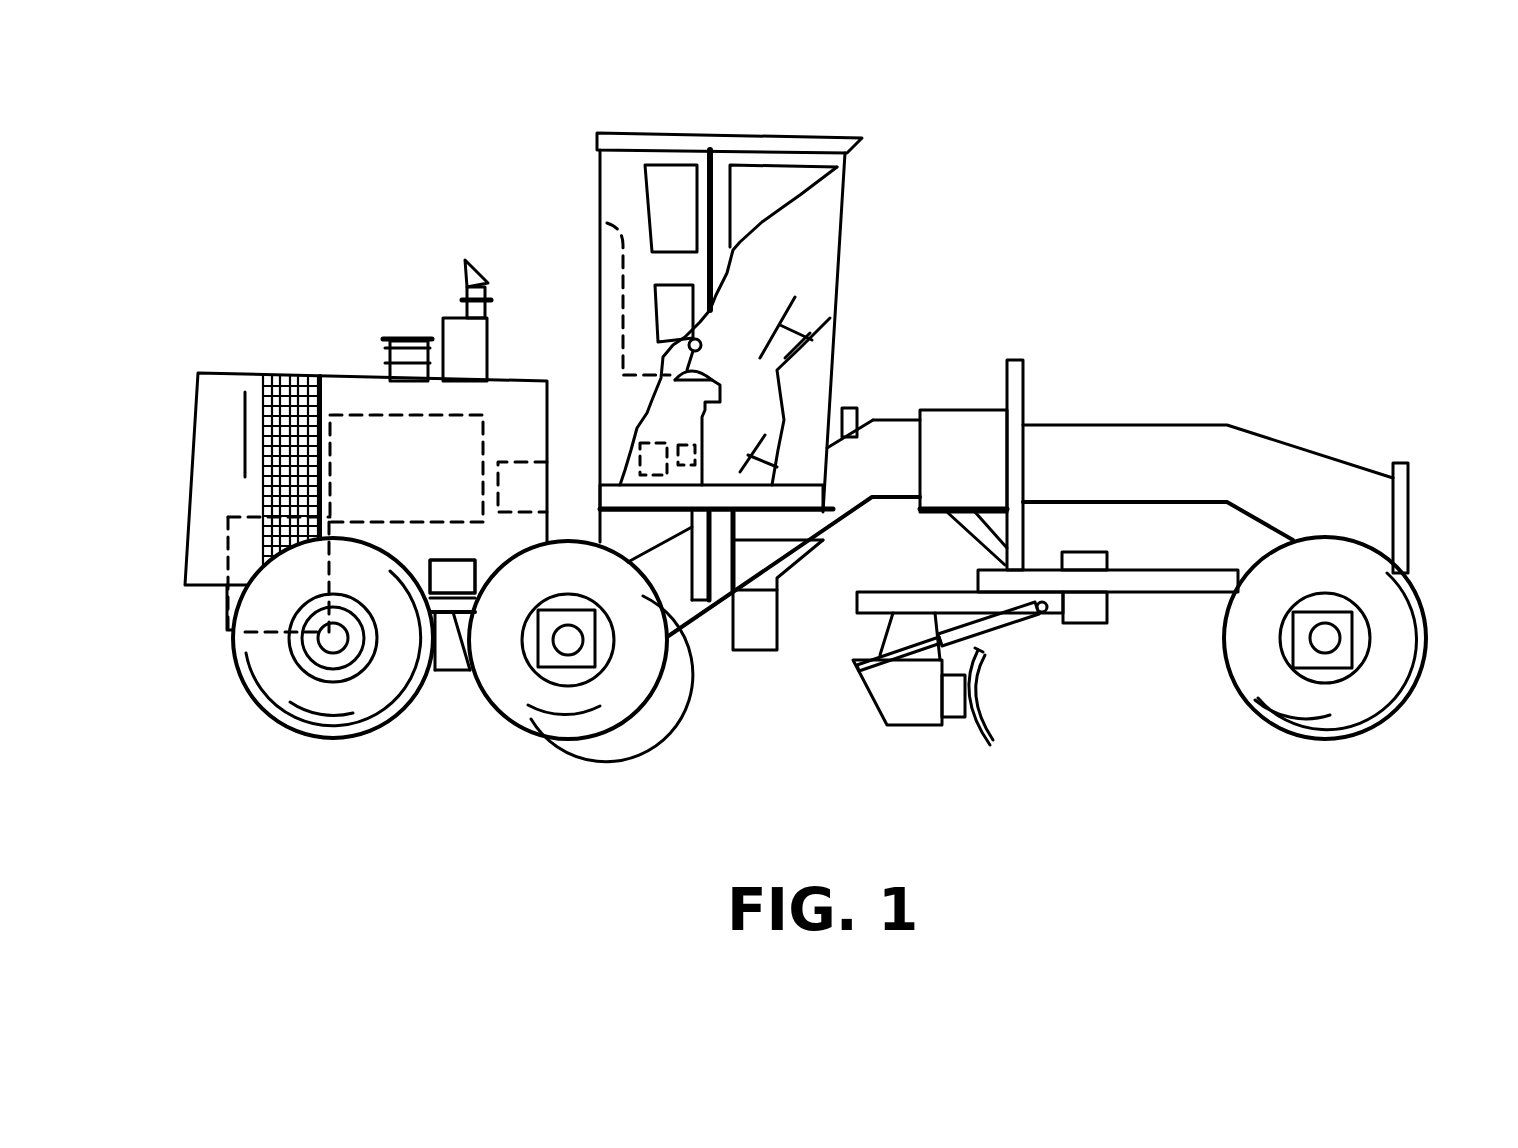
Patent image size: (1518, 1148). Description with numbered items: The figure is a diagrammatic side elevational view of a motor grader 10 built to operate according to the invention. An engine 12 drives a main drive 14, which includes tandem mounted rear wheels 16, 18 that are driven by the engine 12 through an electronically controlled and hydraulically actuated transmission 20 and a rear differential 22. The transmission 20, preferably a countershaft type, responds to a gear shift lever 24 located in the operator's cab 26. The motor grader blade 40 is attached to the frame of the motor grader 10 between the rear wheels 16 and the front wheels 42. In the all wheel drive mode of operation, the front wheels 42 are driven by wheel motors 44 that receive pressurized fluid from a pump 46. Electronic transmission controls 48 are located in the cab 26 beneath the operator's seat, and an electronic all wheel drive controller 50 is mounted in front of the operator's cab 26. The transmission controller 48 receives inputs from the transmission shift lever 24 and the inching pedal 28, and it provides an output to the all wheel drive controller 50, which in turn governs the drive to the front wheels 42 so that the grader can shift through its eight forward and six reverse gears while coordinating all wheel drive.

The motor grader 10 is at (1160, 266).
The engine 12 is at (397, 423).
The main drive 14 is at (227, 603).
The rear wheel 16 is at (625, 723).
The rear wheel 18 is at (263, 700).
The transmission 20 is at (440, 672).
The rear differential 22 is at (470, 672).
The gear shift lever 24 is at (690, 358).
The operator's cab 26 is at (795, 133).
The inching pedal 28 is at (750, 463).
The motor grader blade 40 is at (970, 703).
The front wheels 42 is at (1397, 712).
The wheel motors 44 is at (1322, 663).
The pump 46 is at (362, 522).
The electronic transmission controls 48 is at (643, 427).
The electronic all wheel drive controller 50 is at (858, 417).